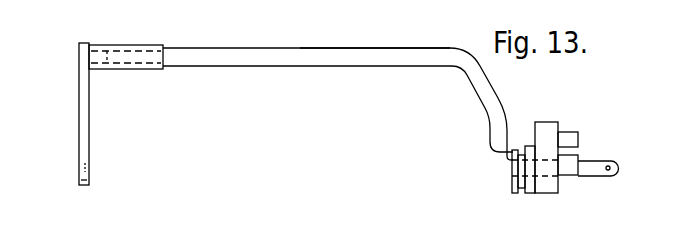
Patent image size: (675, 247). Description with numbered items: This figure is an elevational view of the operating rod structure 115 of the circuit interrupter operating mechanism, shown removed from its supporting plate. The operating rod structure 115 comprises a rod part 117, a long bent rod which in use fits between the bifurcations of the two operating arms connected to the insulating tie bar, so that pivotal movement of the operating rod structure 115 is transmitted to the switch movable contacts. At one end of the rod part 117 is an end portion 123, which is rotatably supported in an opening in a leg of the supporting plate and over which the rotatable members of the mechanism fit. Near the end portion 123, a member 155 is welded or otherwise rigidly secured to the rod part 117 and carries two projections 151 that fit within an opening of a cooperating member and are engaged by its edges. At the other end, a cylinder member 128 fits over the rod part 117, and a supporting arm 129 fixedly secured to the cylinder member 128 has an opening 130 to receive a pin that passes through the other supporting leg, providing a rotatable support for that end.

The operating rod structure 115 is at (250, 60).
The rod part 117 is at (336, 47).
The end portion 123 is at (588, 177).
The cylinder member 128 is at (97, 53).
The supporting arm 129 is at (80, 84).
The opening 130 is at (89, 166).
The projections 151 is at (573, 160).
The member 155 is at (545, 126).